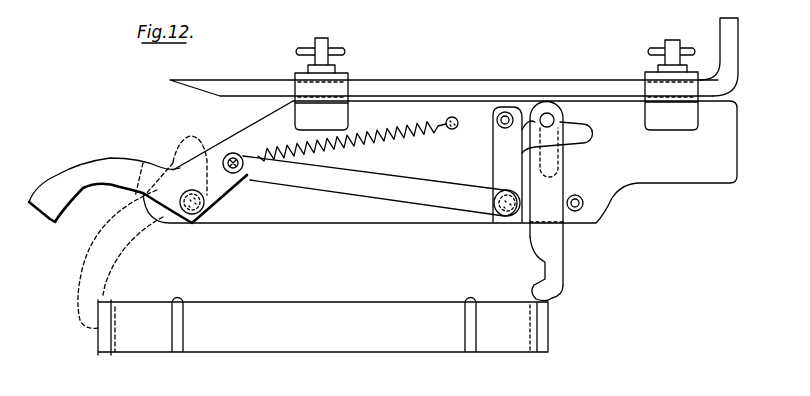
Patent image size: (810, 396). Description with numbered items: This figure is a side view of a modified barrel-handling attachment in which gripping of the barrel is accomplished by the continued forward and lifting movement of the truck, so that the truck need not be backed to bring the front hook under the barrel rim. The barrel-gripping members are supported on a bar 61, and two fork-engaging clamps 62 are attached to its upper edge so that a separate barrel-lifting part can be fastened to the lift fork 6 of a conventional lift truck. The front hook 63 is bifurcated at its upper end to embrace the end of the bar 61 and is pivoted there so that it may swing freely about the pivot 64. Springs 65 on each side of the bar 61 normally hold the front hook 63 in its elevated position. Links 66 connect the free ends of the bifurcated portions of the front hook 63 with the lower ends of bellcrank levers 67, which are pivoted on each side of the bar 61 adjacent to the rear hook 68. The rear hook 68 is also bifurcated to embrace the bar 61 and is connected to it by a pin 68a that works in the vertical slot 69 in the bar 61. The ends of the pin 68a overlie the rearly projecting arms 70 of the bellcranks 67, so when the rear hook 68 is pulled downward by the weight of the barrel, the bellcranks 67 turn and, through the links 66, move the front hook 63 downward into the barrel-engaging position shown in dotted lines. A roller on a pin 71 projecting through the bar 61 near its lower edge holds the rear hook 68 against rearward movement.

The lift fork 6 is at (720, 22).
The bar 61 is at (473, 108).
The fork-engaging clamps 62 is at (345, 75).
The front hook 63 is at (120, 158).
The pivot 64 is at (193, 218).
The springs 65 is at (388, 135).
The links 66 is at (370, 192).
The bellcrank levers 67 is at (493, 162).
The rear hook 68 is at (565, 245).
The pin 68a is at (549, 115).
The vertical slot 69 is at (563, 162).
The rearly projecting arms 70 is at (587, 133).
The pin 71 is at (584, 203).